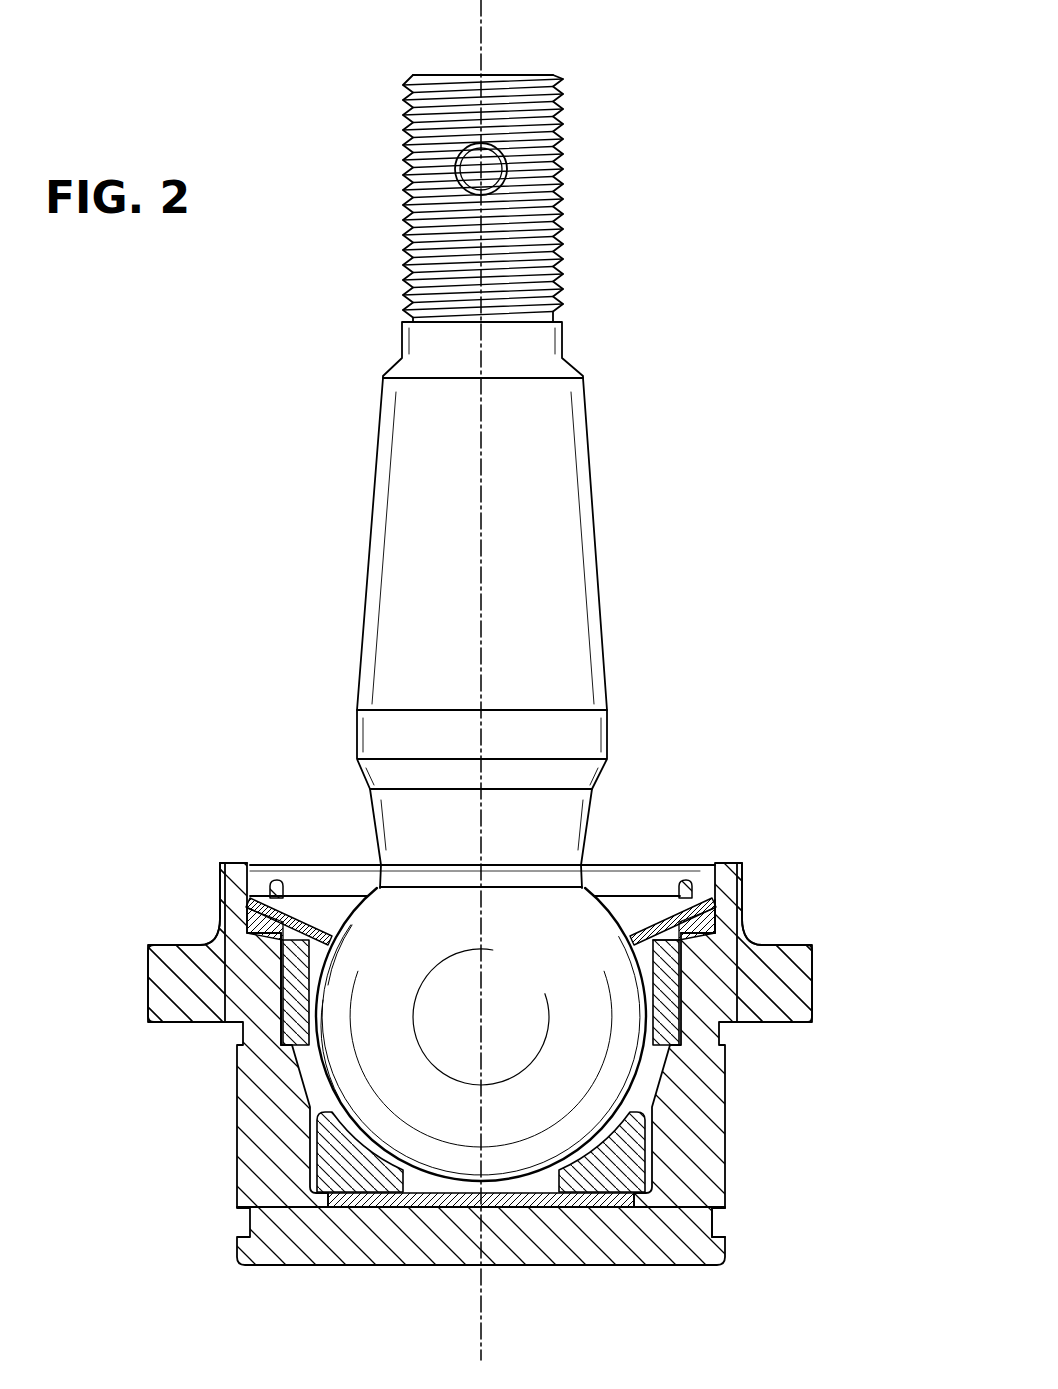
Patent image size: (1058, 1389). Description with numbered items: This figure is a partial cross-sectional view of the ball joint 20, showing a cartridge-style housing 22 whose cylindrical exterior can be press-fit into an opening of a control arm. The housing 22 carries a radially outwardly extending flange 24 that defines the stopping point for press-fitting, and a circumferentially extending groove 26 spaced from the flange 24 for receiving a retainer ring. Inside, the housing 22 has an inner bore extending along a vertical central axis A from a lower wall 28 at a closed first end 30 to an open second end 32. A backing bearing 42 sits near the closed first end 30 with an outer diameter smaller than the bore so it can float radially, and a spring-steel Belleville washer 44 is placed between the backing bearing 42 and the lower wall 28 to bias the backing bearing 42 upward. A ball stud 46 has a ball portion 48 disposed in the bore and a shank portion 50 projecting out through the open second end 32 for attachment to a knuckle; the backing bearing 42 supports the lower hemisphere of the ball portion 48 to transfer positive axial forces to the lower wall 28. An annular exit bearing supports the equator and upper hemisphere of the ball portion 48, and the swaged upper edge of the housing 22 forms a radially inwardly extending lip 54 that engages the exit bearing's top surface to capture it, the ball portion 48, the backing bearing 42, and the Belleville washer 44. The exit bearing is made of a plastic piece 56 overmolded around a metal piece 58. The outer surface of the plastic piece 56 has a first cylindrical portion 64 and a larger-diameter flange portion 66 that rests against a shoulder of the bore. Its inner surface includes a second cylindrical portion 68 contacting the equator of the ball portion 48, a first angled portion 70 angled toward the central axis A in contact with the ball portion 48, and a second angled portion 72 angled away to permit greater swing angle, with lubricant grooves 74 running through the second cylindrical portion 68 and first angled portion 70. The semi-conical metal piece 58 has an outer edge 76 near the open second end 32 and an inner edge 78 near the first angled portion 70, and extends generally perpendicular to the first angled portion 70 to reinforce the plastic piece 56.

The central axis A is at (483, 40).
The ball joint 20 is at (727, 307).
The housing 22 is at (733, 1122).
The flange 24 is at (797, 983).
The groove 26 is at (715, 1220).
The lower wall 28 is at (590, 1240).
The closed first end 30 is at (490, 1184).
The open second end 32 is at (623, 865).
The backing bearing 42 is at (345, 1168).
The Belleville washer 44 is at (376, 1196).
The ball stud 46 is at (598, 497).
The ball portion 48 is at (578, 1058).
The shank portion 50 is at (410, 553).
The lip 54 is at (703, 880).
The plastic piece 56 is at (706, 965).
The metal piece 58 is at (288, 900).
The first cylindrical portion 64 is at (255, 990).
The flange portion 66 is at (230, 926).
The second cylindrical portion 68 is at (334, 1052).
The first angled portion 70 is at (340, 952).
The second angled portion 72 is at (310, 890).
The lubricant grooves 74 is at (300, 995).
The outer edge 76 is at (718, 902).
The inner edge 78 is at (652, 936).